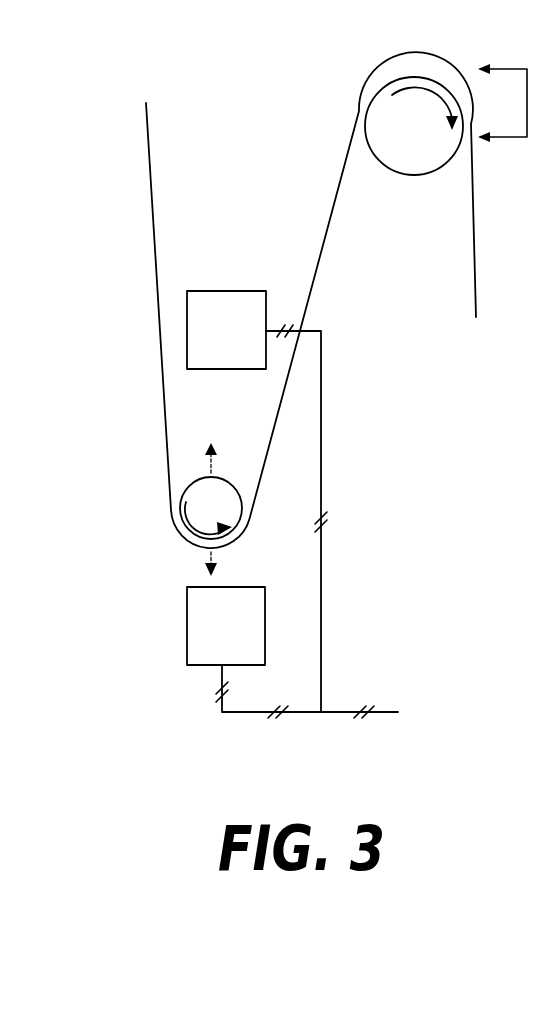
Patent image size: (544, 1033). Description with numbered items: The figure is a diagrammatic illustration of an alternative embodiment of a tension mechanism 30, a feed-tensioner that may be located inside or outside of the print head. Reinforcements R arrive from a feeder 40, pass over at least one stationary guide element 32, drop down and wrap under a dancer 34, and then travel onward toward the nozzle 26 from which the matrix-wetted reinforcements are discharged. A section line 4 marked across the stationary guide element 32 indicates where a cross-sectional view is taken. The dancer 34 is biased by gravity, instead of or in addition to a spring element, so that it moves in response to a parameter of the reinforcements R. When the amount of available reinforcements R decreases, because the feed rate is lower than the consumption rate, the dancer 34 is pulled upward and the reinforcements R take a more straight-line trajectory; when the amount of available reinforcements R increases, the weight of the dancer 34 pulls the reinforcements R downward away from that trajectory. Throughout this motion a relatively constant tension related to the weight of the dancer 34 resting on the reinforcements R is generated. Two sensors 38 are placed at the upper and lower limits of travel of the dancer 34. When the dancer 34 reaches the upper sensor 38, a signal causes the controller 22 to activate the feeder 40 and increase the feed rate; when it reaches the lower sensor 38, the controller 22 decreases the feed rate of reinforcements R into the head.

The tension mechanism 30 is at (126, 716).
The stationary guide element 32 is at (423, 138).
The dancer 34 is at (223, 519).
The sensor 38 is at (238, 342).
The reinforcements R is at (474, 240).
The section line 4- 4 is at (502, 101).
The feeder 40 is at (150, 78).
The nozzle 26 is at (477, 337).
The controller 22 is at (335, 525).